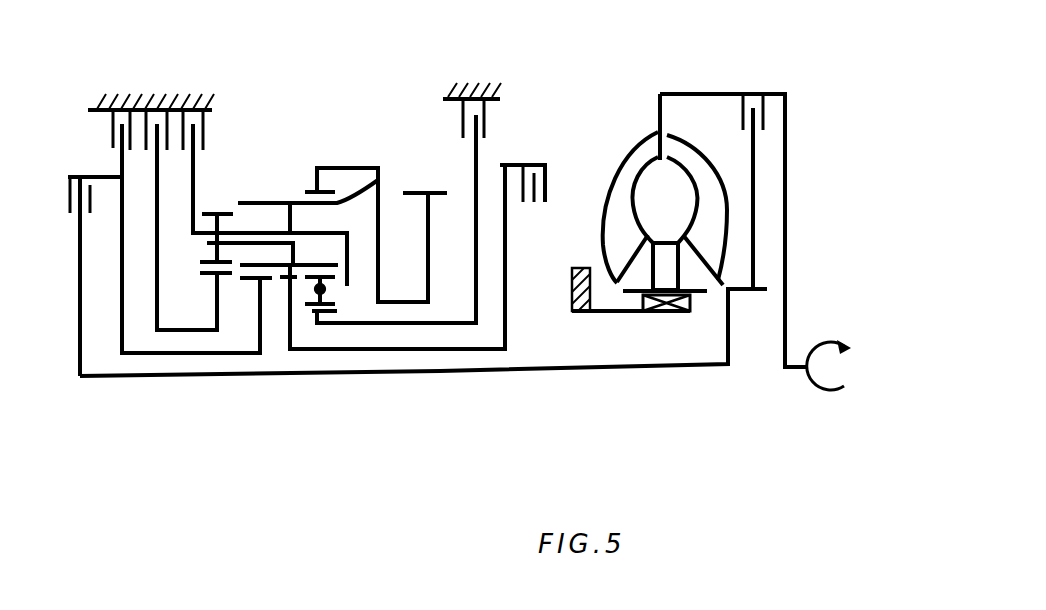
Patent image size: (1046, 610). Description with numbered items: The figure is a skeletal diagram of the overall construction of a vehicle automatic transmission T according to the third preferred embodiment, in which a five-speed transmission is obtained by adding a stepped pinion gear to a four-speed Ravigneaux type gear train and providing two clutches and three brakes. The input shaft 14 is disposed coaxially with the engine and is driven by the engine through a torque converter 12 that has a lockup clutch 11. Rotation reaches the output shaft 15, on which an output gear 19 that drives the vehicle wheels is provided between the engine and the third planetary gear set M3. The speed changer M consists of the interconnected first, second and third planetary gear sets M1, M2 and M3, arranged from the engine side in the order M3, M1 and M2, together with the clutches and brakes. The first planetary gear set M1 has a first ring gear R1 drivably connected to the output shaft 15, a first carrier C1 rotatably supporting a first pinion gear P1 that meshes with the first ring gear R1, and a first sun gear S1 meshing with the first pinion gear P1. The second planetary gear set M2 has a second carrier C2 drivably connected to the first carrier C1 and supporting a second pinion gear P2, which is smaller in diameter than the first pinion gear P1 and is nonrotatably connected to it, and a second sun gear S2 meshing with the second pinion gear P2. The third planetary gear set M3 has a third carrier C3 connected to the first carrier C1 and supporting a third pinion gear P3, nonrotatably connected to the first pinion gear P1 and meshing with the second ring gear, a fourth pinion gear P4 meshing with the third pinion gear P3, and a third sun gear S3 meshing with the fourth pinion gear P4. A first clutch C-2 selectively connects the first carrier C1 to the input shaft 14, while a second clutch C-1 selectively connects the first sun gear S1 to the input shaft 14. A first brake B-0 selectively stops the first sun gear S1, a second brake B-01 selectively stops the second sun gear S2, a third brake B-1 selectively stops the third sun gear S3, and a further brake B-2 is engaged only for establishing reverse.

The first brake B-0 is at (107, 126).
The second brake B-01 is at (158, 104).
The reverse brake B-2 is at (207, 120).
The second clutch C-1 is at (68, 188).
The first sun gear S1 is at (256, 282).
The second sun gear S2 is at (214, 278).
The second carrier C2 is at (206, 244).
The second pinion gear P2 is at (210, 212).
The first pinion gear P1 is at (252, 202).
The first carrier C1 is at (308, 233).
The first ring gear R1 is at (312, 192).
The third pinion gear P3 is at (372, 181).
The output gear 19 is at (437, 192).
The third carrier C3 is at (348, 263).
The fourth pinion gear P4 is at (335, 302).
The third sun gear S3 is at (318, 325).
The third brake B-1 is at (462, 109).
The output shaft 15 is at (418, 301).
The automatic transmission T is at (523, 78).
The first clutch C-2 is at (545, 166).
The input shaft 14 is at (490, 370).
The torque converter 12 is at (657, 110).
The lockup clutch 11 is at (733, 93).
The second planetary gear set M2 is at (223, 383).
The first planetary gear set M1 is at (263, 383).
The third planetary gear set M3 is at (320, 383).
The speed changer M is at (358, 455).